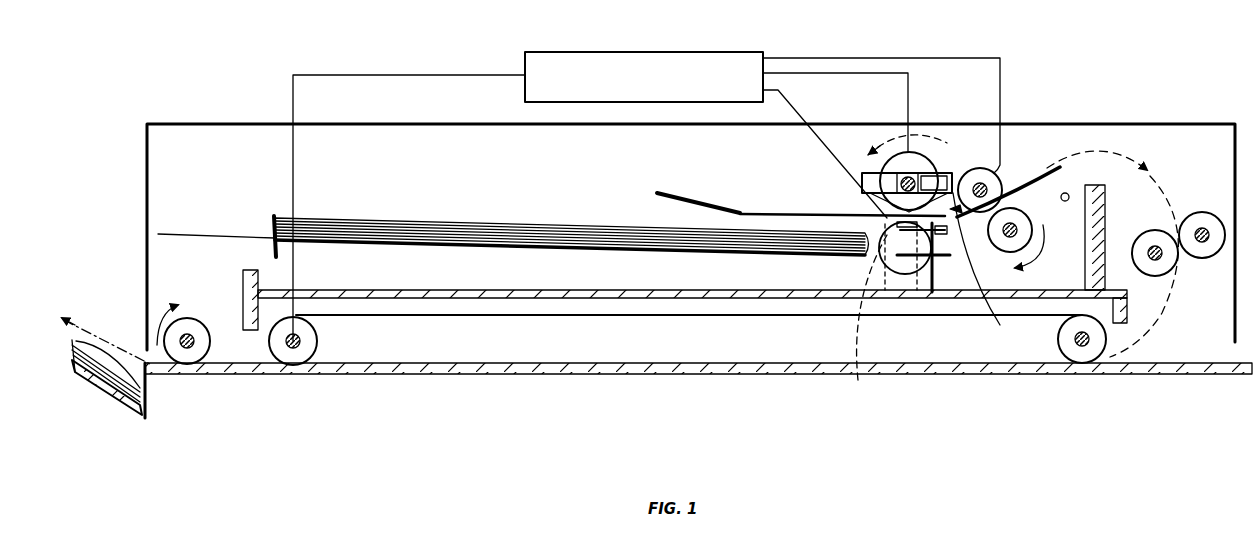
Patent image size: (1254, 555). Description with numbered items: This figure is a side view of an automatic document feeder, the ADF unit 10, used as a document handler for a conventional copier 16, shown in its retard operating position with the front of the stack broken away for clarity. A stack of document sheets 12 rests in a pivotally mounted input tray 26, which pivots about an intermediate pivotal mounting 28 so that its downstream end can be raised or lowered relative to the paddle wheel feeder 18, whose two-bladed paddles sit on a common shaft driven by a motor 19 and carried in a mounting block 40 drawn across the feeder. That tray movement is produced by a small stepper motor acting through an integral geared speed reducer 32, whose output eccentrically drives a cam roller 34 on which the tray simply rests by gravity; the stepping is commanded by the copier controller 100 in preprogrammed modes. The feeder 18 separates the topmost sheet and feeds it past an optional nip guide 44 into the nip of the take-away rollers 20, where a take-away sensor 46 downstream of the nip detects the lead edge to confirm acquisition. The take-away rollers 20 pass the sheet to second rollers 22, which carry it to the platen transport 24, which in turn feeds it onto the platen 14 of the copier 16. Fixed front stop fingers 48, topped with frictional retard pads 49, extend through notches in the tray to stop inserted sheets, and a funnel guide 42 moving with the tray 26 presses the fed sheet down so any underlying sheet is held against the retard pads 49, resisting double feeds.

The ADF unit 10 is at (546, 26).
The copier controller 100 is at (727, 55).
The stack of document sheets 12 is at (458, 217).
The platen 14 is at (670, 373).
The copier 16 is at (450, 449).
The paddle wheel feeder 18 is at (937, 183).
The motor 19 is at (900, 153).
The take-away rollers 20 is at (1006, 172).
The second rollers 22 is at (1200, 217).
The platen transport 24 is at (286, 378).
The input tray 26 is at (747, 250).
The pivotal mounting 28 is at (530, 250).
The geared speed reducer 32 is at (888, 274).
The cam roller 34 is at (867, 321).
The pick roller carriage 40 is at (860, 183).
The funnel guide 42 is at (697, 200).
The nip guide 44 is at (1005, 256).
The take-away sensor 46 is at (984, 183).
The front stop fingers 48 is at (932, 278).
The retard pads 49 is at (940, 217).